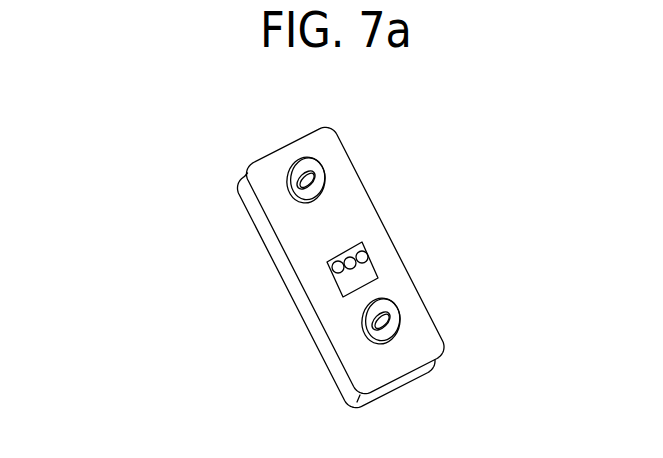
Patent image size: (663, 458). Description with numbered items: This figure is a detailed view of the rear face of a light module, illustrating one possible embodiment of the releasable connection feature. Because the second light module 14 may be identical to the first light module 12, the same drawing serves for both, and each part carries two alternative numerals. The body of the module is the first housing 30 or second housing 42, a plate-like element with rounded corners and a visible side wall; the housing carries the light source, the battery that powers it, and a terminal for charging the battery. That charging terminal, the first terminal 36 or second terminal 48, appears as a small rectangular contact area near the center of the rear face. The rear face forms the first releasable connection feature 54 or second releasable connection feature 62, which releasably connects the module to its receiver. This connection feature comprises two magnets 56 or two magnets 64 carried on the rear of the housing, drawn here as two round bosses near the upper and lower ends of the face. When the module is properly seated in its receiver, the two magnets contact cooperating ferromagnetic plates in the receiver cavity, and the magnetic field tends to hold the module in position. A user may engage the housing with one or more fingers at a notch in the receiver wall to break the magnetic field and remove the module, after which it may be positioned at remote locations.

The first light module 12 is at (330, 257).
The second light module 14 is at (428, 207).
The first housing 30 is at (263, 290).
The second housing 42 is at (293, 260).
The first terminal 36 is at (457, 259).
The second terminal 48 is at (365, 266).
The first releasable connection feature 54 is at (243, 276).
The second releasable connection feature 62 is at (272, 187).
The magnets 56 is at (447, 217).
The magnets 64 is at (323, 171).